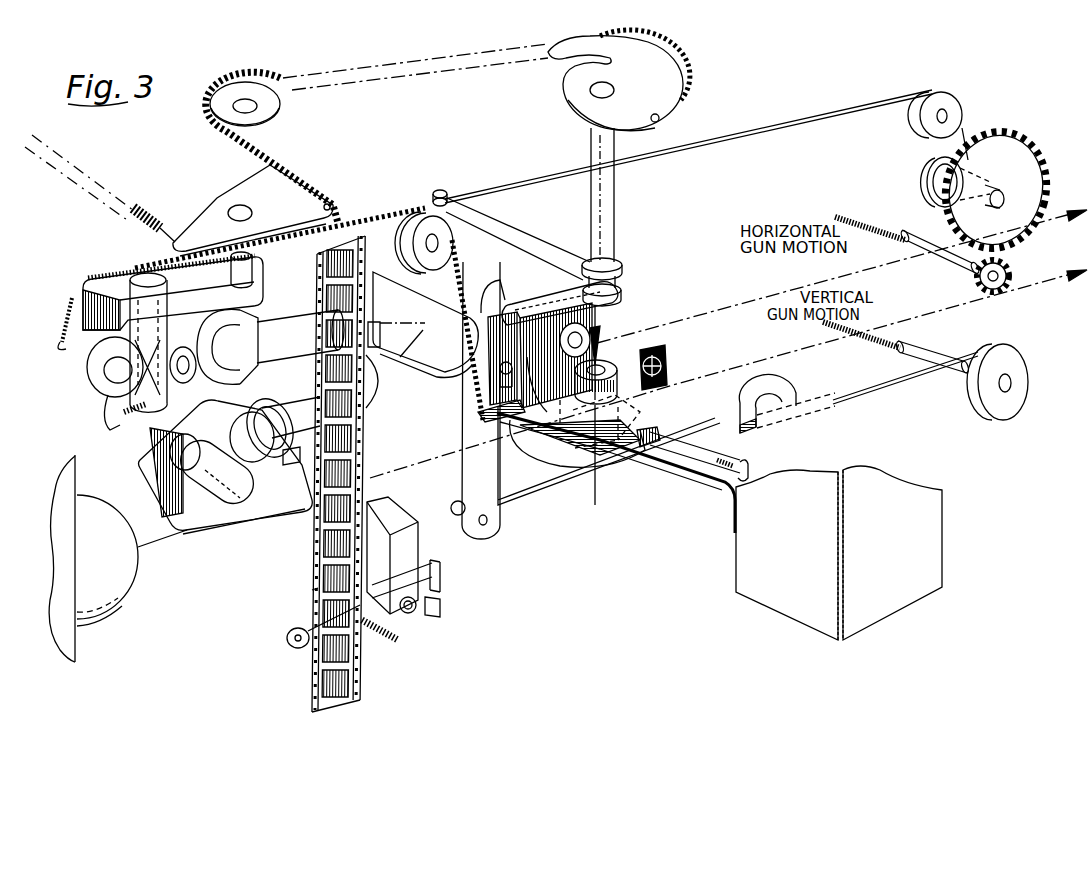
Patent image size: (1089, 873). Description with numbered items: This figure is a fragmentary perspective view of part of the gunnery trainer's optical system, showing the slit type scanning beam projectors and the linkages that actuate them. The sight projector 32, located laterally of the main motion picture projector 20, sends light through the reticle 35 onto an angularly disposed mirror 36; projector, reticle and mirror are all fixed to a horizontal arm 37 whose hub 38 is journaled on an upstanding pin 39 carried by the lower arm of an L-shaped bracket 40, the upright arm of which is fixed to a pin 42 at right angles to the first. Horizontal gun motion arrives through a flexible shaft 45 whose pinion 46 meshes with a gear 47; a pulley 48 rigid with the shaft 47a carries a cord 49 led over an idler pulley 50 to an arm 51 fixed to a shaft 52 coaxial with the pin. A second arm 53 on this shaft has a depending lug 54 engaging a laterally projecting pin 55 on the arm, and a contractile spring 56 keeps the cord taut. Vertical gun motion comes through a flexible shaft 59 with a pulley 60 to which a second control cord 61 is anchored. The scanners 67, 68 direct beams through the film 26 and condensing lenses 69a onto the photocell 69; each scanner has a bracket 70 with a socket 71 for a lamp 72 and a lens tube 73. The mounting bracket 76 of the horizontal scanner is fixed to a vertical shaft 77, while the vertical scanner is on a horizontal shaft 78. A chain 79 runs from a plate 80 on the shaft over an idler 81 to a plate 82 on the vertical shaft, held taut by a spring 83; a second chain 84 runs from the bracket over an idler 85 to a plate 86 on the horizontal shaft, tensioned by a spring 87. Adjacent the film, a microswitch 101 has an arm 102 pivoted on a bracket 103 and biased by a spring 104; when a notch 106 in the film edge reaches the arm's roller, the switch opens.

The main motion picture projector 20 is at (106, 630).
The motion picture film 26 is at (362, 441).
The sight projector 32 is at (950, 505).
The reticle 35 is at (665, 352).
The mirror 36 is at (600, 346).
The horizontal arm 37 is at (538, 392).
The hub 38 is at (628, 409).
The upstanding pin 39 is at (617, 372).
The L-shaped bracket 40 is at (553, 442).
The pin 42 is at (505, 301).
The flexible shaft 45 is at (872, 231).
The pinion 46 is at (1011, 274).
The gear 47 is at (1040, 176).
The shaft 47a is at (1003, 186).
The pulley 48 is at (935, 173).
The cord 49 is at (813, 117).
The idler pulley 50 is at (930, 139).
The arm 51 is at (544, 235).
The shaft 52 is at (614, 193).
The second arm 53 is at (577, 289).
The depending lug 54 is at (496, 413).
The laterally projecting pin 55 is at (503, 371).
The contractile spring 56 is at (681, 461).
The flexible shaft 59 is at (865, 337).
The pulley 60 is at (1030, 376).
The second control cord 61 is at (919, 374).
The scanner 67 is at (296, 323).
The scanner 68 is at (307, 404).
The photocell 69 is at (436, 372).
The condensing lenses 69a is at (382, 320).
The bracket 70 is at (156, 491).
The socket 71 is at (168, 468).
The lamp 72 is at (108, 408).
The tube 73 is at (288, 415).
The mounting bracket 76 is at (100, 281).
The vertical shaft 77 is at (253, 268).
The horizontal shaft 78 is at (180, 408).
The chain 79 is at (246, 149).
The plate 80 is at (670, 74).
The idler 81 is at (281, 105).
The plate 82 is at (312, 196).
The contractile spring 83 is at (157, 214).
The second chain 84 is at (466, 275).
The idler 85 is at (410, 252).
The plate 86 is at (58, 345).
The contractile spring 87 is at (138, 420).
The microswitch 101 is at (424, 550).
The arm 102 is at (397, 612).
The bracket 103 is at (438, 612).
The contractile spring 104 is at (381, 642).
The notches 106 is at (313, 589).